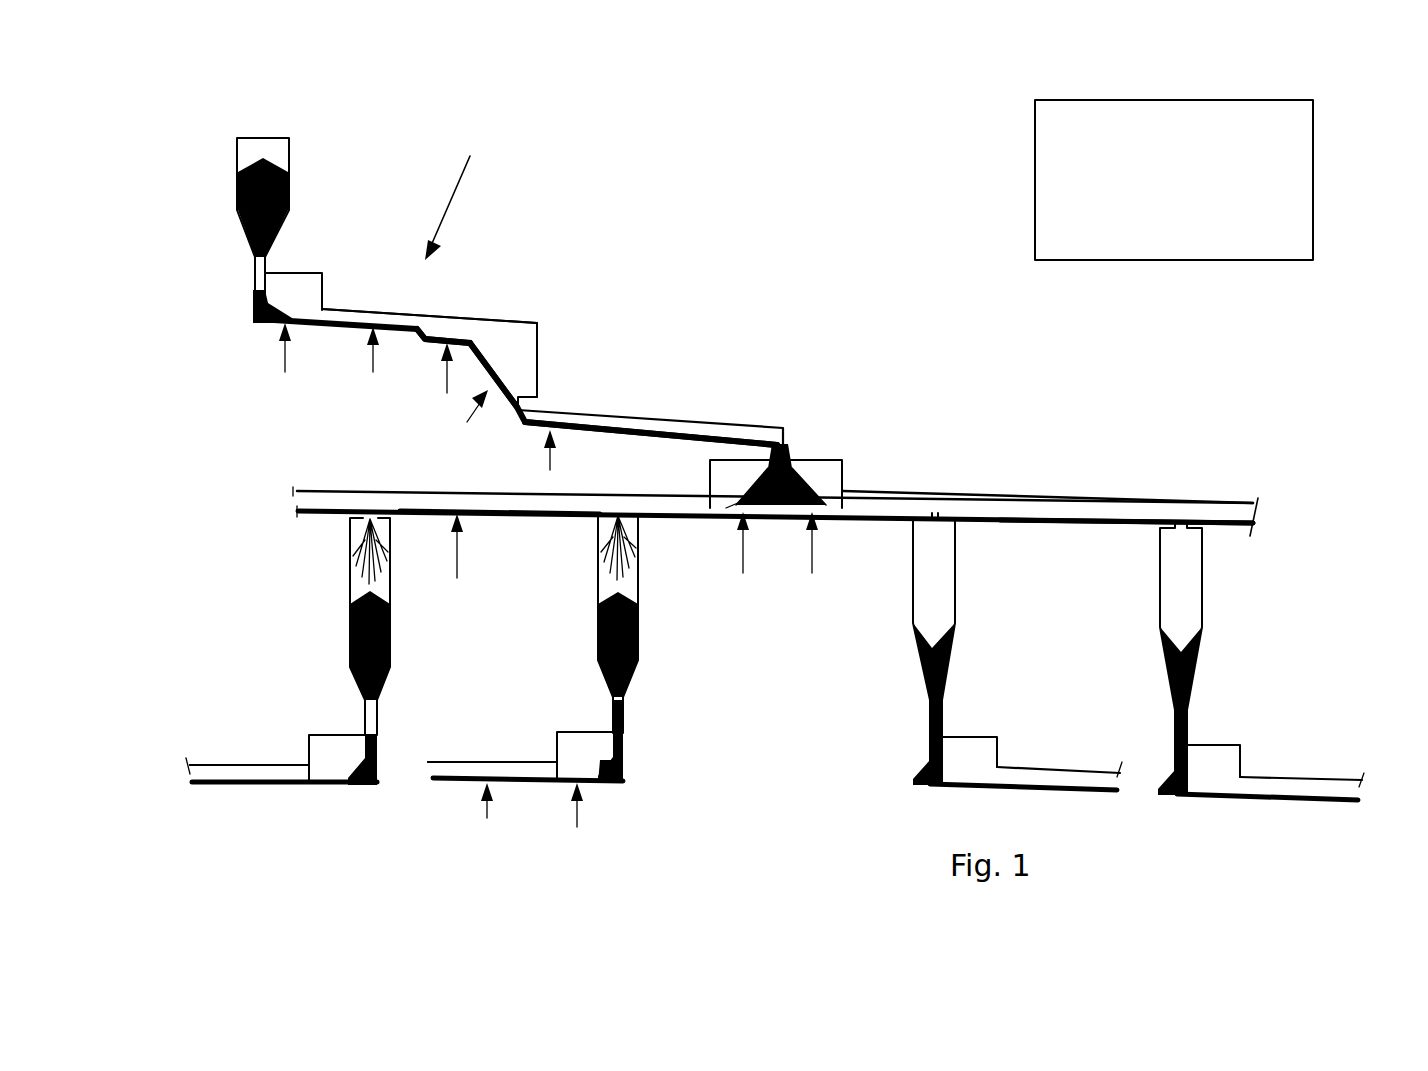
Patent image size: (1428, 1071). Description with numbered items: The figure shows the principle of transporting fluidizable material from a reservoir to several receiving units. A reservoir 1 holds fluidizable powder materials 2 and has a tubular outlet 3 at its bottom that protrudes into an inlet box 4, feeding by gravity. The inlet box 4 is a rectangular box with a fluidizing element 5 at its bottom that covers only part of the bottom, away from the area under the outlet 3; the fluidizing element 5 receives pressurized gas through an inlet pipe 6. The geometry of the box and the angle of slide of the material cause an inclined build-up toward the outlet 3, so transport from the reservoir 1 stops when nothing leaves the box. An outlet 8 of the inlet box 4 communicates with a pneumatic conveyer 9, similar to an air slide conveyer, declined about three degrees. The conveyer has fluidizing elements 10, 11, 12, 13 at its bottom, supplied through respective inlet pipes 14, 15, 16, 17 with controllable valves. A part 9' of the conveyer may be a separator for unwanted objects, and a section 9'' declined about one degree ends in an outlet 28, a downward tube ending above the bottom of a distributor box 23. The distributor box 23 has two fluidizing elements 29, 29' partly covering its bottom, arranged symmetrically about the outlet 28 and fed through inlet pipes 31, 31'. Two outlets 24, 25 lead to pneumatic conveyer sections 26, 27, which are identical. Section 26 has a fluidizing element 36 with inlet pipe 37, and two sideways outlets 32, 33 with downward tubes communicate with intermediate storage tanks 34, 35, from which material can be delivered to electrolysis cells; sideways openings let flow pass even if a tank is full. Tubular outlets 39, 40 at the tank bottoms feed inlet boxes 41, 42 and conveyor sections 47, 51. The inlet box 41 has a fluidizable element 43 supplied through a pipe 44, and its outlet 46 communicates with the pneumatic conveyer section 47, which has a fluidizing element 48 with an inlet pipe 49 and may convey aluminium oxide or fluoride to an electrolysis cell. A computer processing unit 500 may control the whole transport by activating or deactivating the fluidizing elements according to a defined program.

The reservoir 1 is at (292, 180).
The fluidizable powder materials 2 is at (238, 177).
The tubular outlet 3 is at (262, 276).
The inlet box 4 is at (293, 293).
The fluidizing element 5 is at (267, 327).
The inlet pipe 6 is at (283, 347).
The outlet 8 is at (320, 313).
The pneumatic conveyer 9 is at (459, 191).
The separator part 9' is at (491, 295).
The conveyer section 9'' is at (651, 412).
The fluidizing element 10 is at (357, 327).
The fluidizing element 11 is at (443, 337).
The fluidizing element 12 is at (513, 322).
The fluidizing element 13 is at (513, 432).
The inlet pipe 14 is at (372, 337).
The inlet pipe 15 is at (450, 343).
The inlet pipe 16 is at (520, 340).
The inlet pipe 17 is at (557, 437).
The distributor box 23 is at (820, 478).
The outlet 24 is at (705, 508).
The outlet 25 is at (843, 463).
The pneumatic conveyer section 26 is at (520, 500).
The pneumatic conveyer section 27 is at (1070, 497).
The outlet 28 is at (790, 455).
The fluidizing element 29 is at (704, 599).
The fluidizing element 29' is at (850, 520).
The inlet pipe 31 is at (759, 566).
The inlet pipe 31' is at (834, 566).
The outlet 32 is at (605, 518).
The outlet 33 is at (350, 518).
The intermediate storage tank 34 is at (598, 593).
The intermediate storage tank 35 is at (347, 567).
The fluidizing element 36 is at (494, 513).
The inlet pipe 37 is at (452, 528).
The tubular outlet 39 is at (623, 733).
The tubular outlet 40 is at (365, 715).
The inlet box 41 is at (590, 748).
The inlet box 42 is at (335, 753).
The fluidizable element 43 is at (600, 783).
The pipe 44 is at (570, 800).
The outlet 46 is at (557, 762).
The pneumatic conveyer section 47 is at (433, 778).
The fluidizing element 48 is at (463, 770).
The inlet pipe 49 is at (478, 805).
The conveyor section 51 is at (207, 783).
The computer processing unit 500 is at (1315, 172).